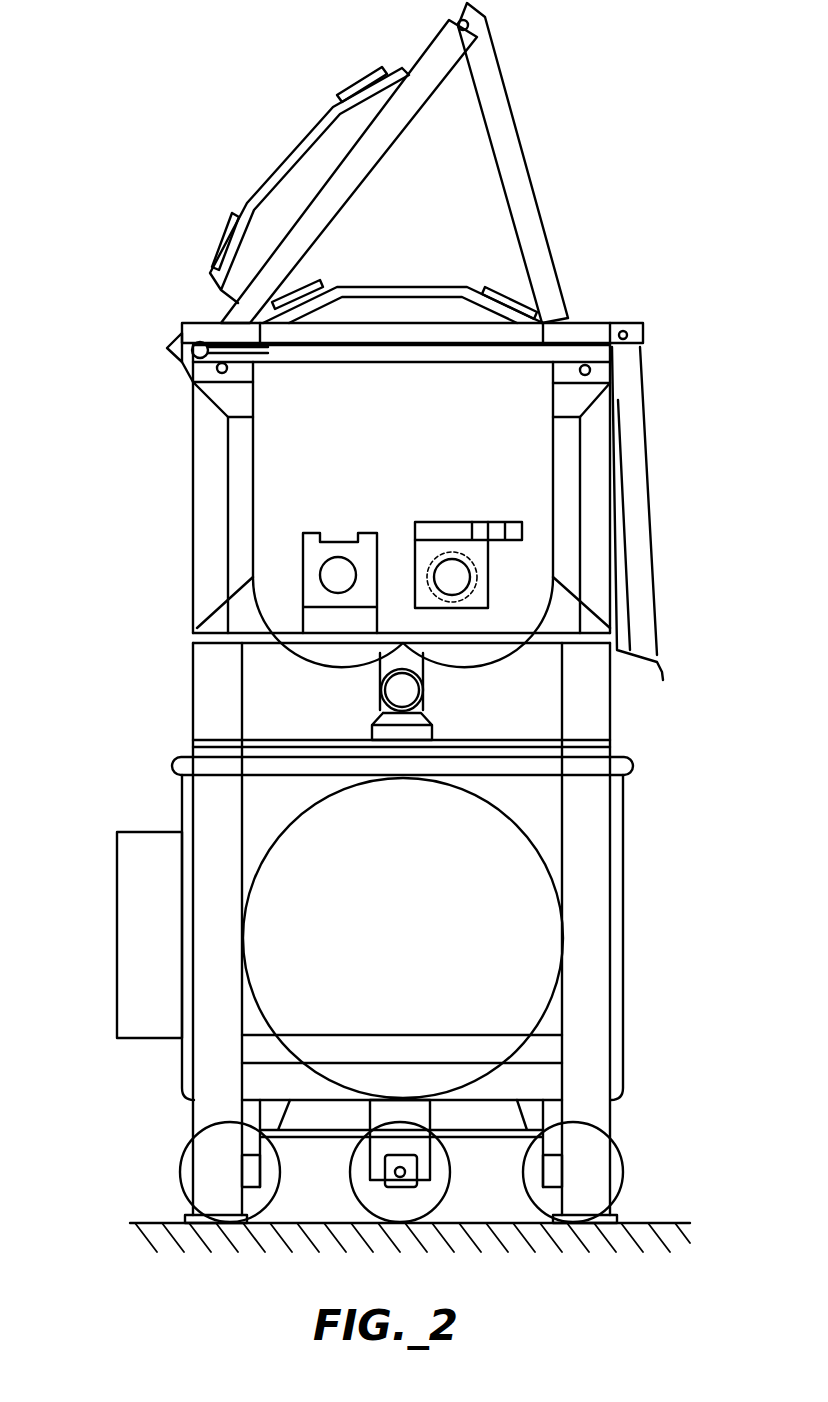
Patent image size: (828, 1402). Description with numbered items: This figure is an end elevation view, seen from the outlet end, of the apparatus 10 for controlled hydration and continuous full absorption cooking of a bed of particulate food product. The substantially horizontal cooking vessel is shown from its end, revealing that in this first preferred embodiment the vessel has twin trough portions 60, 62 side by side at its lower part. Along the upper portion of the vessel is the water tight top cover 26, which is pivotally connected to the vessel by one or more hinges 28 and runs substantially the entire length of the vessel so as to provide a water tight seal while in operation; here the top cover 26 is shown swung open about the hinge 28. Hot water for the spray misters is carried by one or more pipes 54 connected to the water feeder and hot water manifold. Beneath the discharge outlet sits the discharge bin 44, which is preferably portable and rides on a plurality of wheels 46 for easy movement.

The apparatus 10 is at (655, 73).
The top cover 26 is at (307, 170).
The hinge 28 is at (203, 333).
The discharge bin 44 is at (627, 923).
The wheels 46 is at (183, 1175).
The pipe 54 is at (135, 948).
The trough portion 60 is at (285, 568).
The trough portion 62 is at (510, 588).